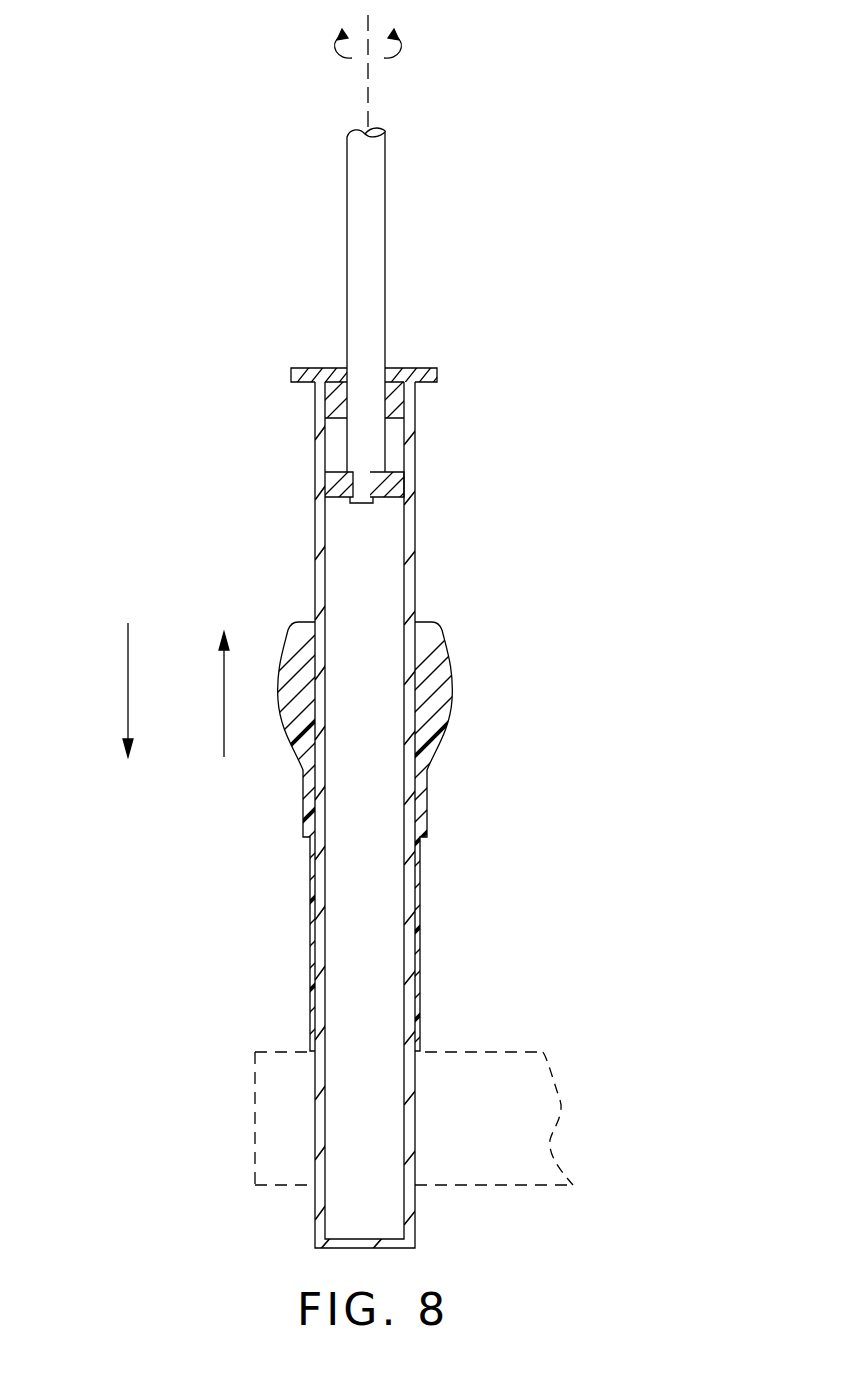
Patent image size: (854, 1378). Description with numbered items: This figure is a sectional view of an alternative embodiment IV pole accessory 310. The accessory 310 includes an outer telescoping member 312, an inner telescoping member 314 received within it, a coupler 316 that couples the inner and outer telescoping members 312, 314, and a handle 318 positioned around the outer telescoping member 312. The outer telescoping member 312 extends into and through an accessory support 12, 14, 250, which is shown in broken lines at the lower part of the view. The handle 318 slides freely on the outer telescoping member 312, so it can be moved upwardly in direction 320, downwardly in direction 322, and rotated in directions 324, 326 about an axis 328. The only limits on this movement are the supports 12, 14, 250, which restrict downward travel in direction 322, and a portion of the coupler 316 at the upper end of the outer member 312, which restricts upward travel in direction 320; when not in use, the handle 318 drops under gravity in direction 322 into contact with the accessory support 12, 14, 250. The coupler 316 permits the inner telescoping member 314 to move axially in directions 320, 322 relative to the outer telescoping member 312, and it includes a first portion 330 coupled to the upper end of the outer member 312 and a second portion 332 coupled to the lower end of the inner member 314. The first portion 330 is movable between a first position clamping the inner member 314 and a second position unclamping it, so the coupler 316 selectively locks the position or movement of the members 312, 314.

The accessory 310 is at (520, 200).
The outer telescoping member 312 is at (420, 575).
The inner telescoping member 314 is at (385, 272).
The coupler 316 is at (441, 396).
The handle 318 is at (445, 702).
The upward direction 320 is at (224, 673).
The downward direction 322 is at (128, 663).
The rotation direction 324 is at (390, 60).
The rotation direction 326 is at (345, 60).
The axis 328 is at (368, 20).
The first portion of coupler 330 is at (423, 350).
The second portion of coupler 332 is at (335, 484).
The accessory support 12 is at (470, 1087).
The accessory support 14 is at (470, 1087).
The accessory support 250 is at (545, 1050).